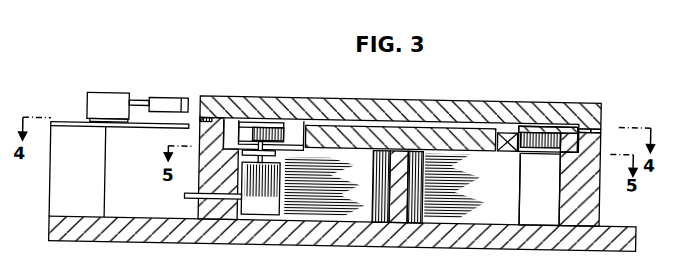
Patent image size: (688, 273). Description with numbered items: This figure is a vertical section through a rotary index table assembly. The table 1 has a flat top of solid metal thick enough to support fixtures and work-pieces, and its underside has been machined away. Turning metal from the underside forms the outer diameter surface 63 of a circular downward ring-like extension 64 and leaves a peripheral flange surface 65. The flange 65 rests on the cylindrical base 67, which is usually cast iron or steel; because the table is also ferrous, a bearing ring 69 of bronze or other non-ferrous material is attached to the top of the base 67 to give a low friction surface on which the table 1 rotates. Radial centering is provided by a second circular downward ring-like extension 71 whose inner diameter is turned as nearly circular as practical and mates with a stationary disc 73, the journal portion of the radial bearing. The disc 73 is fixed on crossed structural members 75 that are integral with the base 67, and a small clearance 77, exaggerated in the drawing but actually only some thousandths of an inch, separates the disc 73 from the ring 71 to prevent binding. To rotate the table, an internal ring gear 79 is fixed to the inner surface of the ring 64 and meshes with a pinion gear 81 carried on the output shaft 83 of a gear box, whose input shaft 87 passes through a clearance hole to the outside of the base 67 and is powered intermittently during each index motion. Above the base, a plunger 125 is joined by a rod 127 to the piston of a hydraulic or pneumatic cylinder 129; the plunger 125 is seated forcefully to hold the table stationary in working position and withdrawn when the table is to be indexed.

The table 1 is at (493, 98).
The outer diameter of ring-like extension 63 is at (210, 121).
The ring-like extension 64 is at (262, 129).
The pinion gear 81 is at (273, 124).
The clearance 77 is at (303, 140).
The output shaft 83 is at (265, 150).
The stationary disc 73 is at (370, 153).
The ring-like extension 71 is at (490, 149).
The crossed structural members 75 is at (500, 209).
The internal ring gear 79 is at (556, 134).
The peripheral flange surface 65 is at (592, 125).
The bearing ring 69 is at (598, 124).
The base 67 is at (602, 203).
The input shaft 87 is at (185, 196).
The plunger 125 is at (163, 101).
The rod 127 is at (140, 104).
The cylinder 129 is at (95, 97).